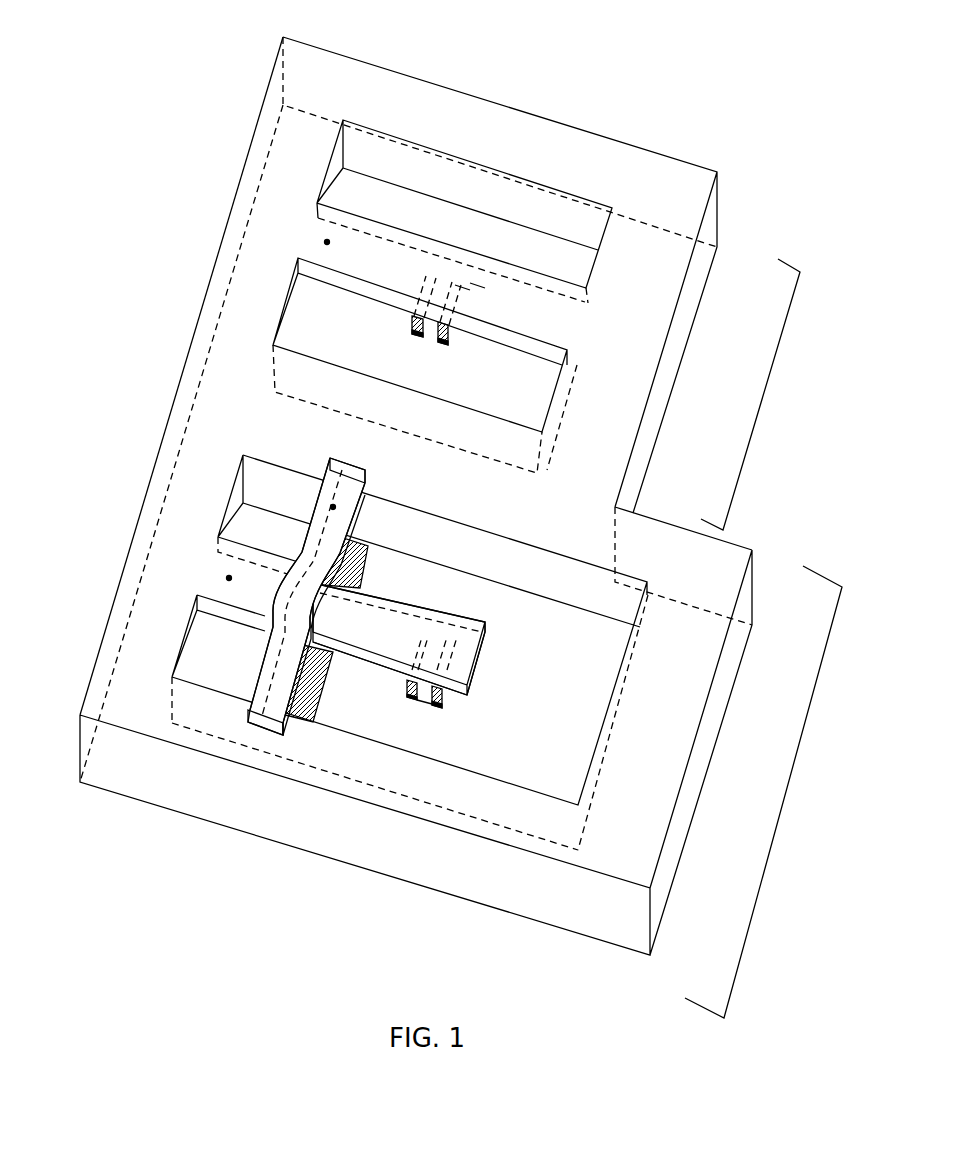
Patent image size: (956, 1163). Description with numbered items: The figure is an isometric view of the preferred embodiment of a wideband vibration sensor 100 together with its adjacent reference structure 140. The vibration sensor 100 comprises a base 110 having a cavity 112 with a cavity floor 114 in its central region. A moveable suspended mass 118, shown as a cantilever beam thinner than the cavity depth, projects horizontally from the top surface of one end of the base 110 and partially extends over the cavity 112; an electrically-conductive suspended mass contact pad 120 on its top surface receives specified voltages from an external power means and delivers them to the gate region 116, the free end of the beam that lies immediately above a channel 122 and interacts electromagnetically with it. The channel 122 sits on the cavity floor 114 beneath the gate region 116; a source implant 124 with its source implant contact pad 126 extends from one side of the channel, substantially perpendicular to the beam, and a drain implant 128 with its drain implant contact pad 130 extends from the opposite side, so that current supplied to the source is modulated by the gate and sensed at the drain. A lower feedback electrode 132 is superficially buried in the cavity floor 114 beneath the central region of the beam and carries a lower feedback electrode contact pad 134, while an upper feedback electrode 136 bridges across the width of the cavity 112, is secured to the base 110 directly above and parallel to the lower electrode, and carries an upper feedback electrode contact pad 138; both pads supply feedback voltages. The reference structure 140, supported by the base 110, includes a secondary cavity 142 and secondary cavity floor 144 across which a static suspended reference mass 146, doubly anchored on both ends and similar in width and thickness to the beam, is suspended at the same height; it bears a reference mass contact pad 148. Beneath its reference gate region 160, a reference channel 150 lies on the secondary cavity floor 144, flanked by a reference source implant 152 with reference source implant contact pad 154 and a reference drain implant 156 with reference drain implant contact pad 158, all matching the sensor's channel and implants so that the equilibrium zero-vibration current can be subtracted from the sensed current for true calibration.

The vibration sensor 100 is at (785, 808).
The base 110 is at (178, 410).
The cavity 112 is at (548, 780).
The cavity floor 114 is at (280, 537).
The gate region 116 is at (458, 646).
The moveable suspended mass 118 is at (233, 617).
The suspended mass contact pad 120 is at (229, 578).
The channel 122 is at (436, 710).
The source implant 124 is at (407, 686).
The source implant contact pad 126 is at (416, 703).
The drain implant 128 is at (440, 696).
The drain implant contact pad 130 is at (437, 706).
The lower feedback electrode 132 is at (294, 727).
The lower feedback electrode contact pad 134 is at (313, 724).
The upper feedback electrode 136 is at (260, 721).
The upper feedback electrode contact pad 138 is at (333, 507).
The reference structure 140 is at (768, 402).
The secondary cavity 142 is at (362, 140).
The secondary cavity floor 144 is at (382, 203).
The static suspended reference mass 146 is at (327, 280).
The reference mass contact pad 148 is at (327, 242).
The reference channel 150 is at (447, 280).
The reference source implant 152 is at (433, 277).
The reference source implant contact pad 154 is at (417, 328).
The reference drain implant 156 is at (463, 287).
The reference drain implant contact pad 158 is at (440, 347).
The reference gate region 160 is at (477, 285).